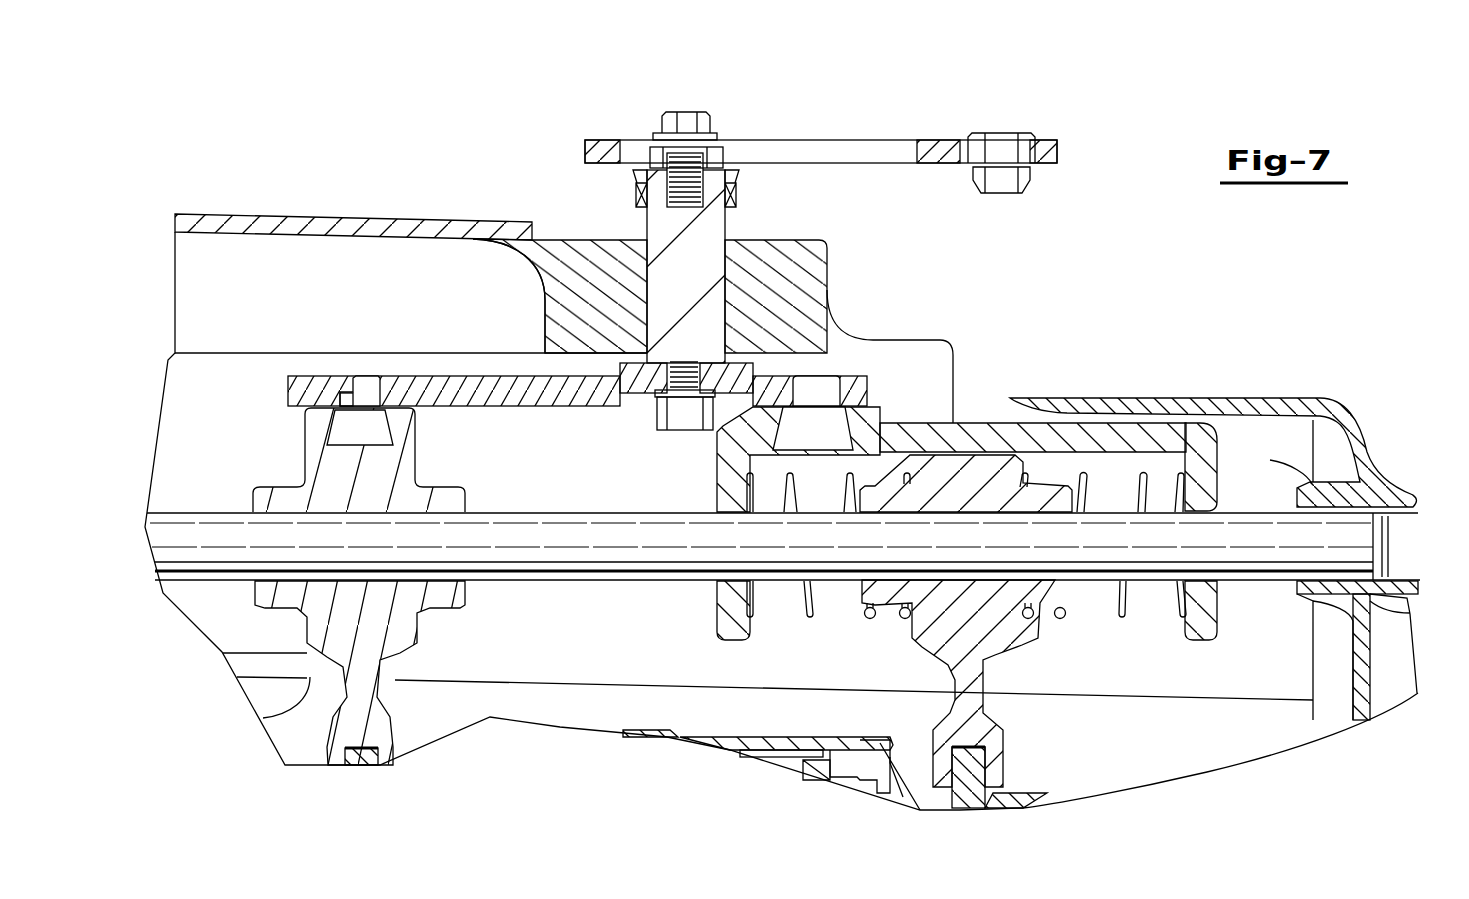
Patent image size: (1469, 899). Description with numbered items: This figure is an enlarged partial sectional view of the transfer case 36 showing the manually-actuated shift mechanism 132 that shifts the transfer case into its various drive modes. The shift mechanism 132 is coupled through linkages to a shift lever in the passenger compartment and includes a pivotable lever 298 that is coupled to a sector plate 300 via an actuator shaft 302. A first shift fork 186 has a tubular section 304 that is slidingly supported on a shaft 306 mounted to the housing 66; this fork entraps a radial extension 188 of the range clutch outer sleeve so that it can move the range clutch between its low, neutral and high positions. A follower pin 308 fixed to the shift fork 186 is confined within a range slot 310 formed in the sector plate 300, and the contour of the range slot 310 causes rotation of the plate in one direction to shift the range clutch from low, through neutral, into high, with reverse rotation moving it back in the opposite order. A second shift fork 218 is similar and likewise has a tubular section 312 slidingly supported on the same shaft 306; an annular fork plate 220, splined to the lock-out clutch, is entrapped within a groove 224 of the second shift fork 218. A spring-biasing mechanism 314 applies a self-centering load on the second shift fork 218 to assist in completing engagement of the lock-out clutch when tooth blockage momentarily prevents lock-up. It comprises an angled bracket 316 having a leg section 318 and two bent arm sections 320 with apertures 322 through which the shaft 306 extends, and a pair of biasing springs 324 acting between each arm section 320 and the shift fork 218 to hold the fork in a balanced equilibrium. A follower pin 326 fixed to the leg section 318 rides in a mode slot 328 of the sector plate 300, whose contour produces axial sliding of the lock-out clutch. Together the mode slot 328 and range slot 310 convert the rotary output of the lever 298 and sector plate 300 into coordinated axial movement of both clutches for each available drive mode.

The transfer case 36 is at (437, 176).
The housing 66 is at (272, 222).
The shift mechanism 132 is at (982, 251).
The shift fork 186 is at (400, 680).
The radial extension 188 is at (367, 767).
The second shift fork 218 is at (992, 655).
The annular fork plate 220 is at (973, 810).
The groove 224 is at (973, 770).
The pivotable lever 298 is at (920, 140).
The sector plate 300 is at (480, 367).
The actuator shaft 302 is at (713, 233).
The tubular section 304 is at (413, 487).
The shaft 306 is at (567, 582).
The follower pin 308 is at (367, 380).
The range slot 310 is at (353, 383).
The tubular section 312 is at (1048, 490).
The spring-biasing mechanism 314 is at (1223, 466).
The angled bracket 316 is at (1203, 492).
The leg section 318 is at (972, 390).
The arm sections 320 is at (727, 460).
The apertures 322 is at (740, 581).
The biasing springs 324 is at (840, 650).
The follower pin 326 is at (817, 383).
The mode slot 328 is at (828, 392).